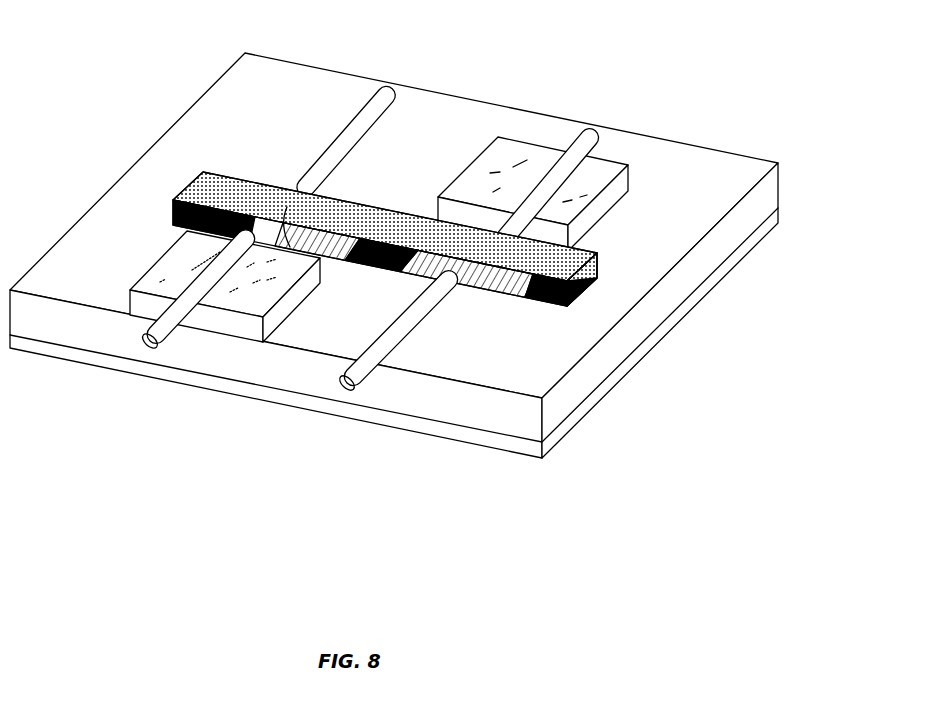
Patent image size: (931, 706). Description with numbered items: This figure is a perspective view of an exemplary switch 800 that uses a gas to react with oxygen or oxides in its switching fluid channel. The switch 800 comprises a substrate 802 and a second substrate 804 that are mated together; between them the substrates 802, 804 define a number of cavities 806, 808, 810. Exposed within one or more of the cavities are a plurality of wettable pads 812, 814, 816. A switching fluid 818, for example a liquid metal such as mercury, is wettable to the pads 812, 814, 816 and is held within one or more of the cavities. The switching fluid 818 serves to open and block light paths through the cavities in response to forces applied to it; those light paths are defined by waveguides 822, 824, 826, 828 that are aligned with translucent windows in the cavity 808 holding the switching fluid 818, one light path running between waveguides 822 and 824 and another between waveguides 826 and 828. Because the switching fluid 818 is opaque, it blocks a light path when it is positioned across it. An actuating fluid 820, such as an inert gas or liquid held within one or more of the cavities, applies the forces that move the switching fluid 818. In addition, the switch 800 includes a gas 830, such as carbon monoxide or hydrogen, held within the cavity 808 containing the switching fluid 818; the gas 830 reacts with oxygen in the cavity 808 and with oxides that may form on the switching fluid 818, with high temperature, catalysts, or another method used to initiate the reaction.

The switch 800 is at (394, 262).
The substrate 802 is at (394, 279).
The second substrate 804 is at (510, 455).
The cavity 806 is at (130, 302).
The cavity 808 is at (592, 298).
The cavity 810 is at (620, 213).
The wettable pad 812 is at (375, 241).
The wettable pad 814 is at (378, 275).
The wettable pad 816 is at (528, 303).
The switching fluid 818 is at (176, 207).
The actuating fluid 820 is at (183, 262).
The waveguide 822 is at (166, 342).
The waveguide 824 is at (375, 98).
The waveguide 826 is at (370, 375).
The waveguide 828 is at (574, 142).
The gas 830 is at (240, 180).